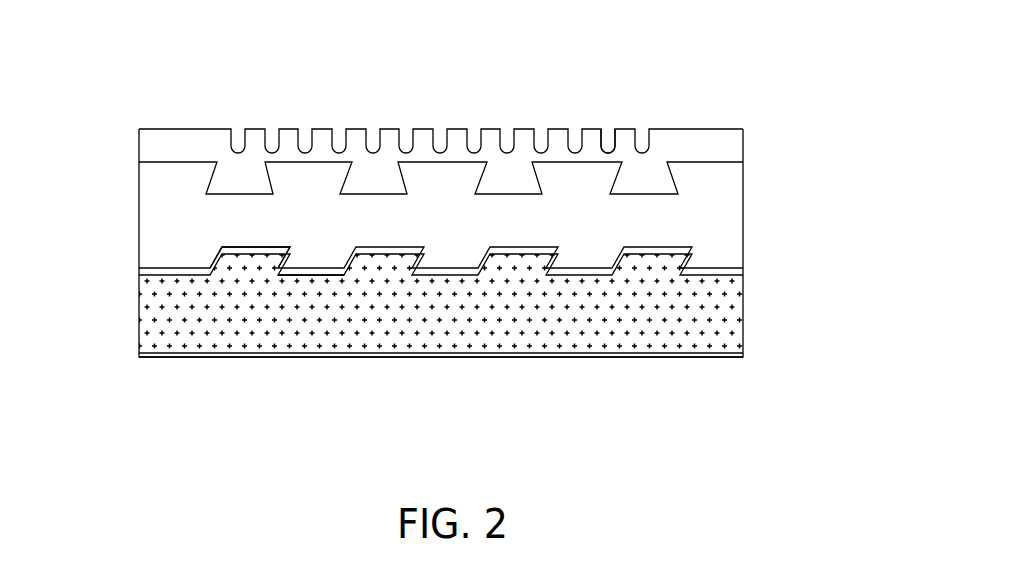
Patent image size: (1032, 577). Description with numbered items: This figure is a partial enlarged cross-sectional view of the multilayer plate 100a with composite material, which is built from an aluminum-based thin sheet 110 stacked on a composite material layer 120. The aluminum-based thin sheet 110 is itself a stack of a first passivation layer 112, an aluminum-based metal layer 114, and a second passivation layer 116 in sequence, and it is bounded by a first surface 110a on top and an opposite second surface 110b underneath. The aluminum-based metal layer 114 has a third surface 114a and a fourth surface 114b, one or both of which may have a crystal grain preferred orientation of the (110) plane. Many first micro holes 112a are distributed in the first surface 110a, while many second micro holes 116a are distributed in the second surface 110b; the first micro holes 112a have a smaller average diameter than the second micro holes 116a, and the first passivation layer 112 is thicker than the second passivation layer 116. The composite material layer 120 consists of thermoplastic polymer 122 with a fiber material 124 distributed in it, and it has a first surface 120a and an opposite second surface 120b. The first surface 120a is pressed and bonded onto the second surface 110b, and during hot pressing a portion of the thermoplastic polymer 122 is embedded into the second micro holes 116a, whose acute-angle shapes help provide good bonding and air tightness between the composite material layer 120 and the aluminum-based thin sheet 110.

The multilayer plate with composite material 100a is at (140, 72).
The aluminum-based thin sheet 110 is at (840, 165).
The first surface 110a is at (713, 128).
The second surface 110b is at (160, 276).
The first passivation layer 112 is at (728, 145).
The first micro holes 112a is at (610, 113).
The aluminum-based metal layer 114 is at (727, 218).
The third surface 114a is at (163, 163).
The fourth surface 114b is at (167, 267).
The second passivation layer 116 is at (743, 272).
The second micro holes 116a is at (250, 278).
The composite material layer 120 is at (840, 300).
The first surface 120a is at (318, 278).
The second surface 120b is at (402, 358).
The thermoplastic polymer 122 is at (732, 318).
The fiber material 124 is at (736, 354).